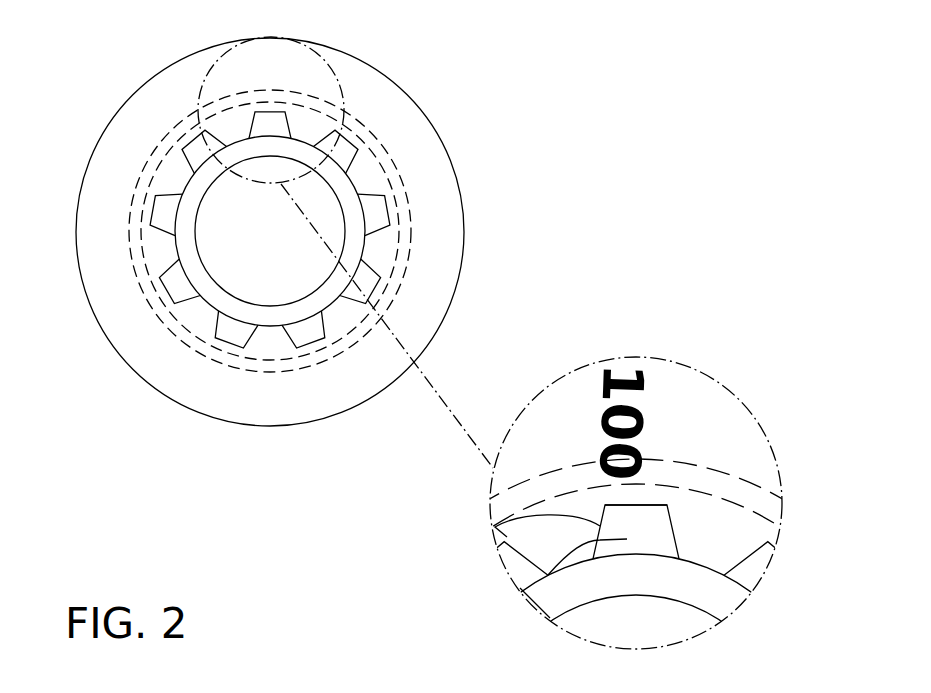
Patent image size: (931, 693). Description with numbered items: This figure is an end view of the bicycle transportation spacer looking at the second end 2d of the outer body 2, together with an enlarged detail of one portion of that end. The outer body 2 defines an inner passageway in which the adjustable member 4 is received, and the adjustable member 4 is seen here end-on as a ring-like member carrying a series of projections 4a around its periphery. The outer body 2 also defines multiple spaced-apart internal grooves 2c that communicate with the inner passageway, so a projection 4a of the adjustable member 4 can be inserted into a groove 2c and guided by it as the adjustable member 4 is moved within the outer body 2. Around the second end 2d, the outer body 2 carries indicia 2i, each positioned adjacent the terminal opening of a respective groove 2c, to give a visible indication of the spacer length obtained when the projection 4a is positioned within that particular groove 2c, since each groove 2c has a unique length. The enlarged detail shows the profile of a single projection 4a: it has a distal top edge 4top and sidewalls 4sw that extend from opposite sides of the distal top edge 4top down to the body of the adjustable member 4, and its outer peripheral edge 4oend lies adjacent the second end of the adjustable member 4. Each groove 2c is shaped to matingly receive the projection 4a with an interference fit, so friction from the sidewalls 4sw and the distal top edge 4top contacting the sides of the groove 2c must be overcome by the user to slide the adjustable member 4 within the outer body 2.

The outer body 2 is at (289, 431).
The second end 2d is at (143, 391).
The indicia 2i is at (380, 87).
The internal grooves 2c is at (188, 157).
The adjustable member 4 is at (348, 243).
The distal edge 4top is at (658, 504).
The outer peripheral edge 4oend is at (628, 517).
The sidewalls 4sw is at (507, 537).
The projection 4a is at (520, 588).